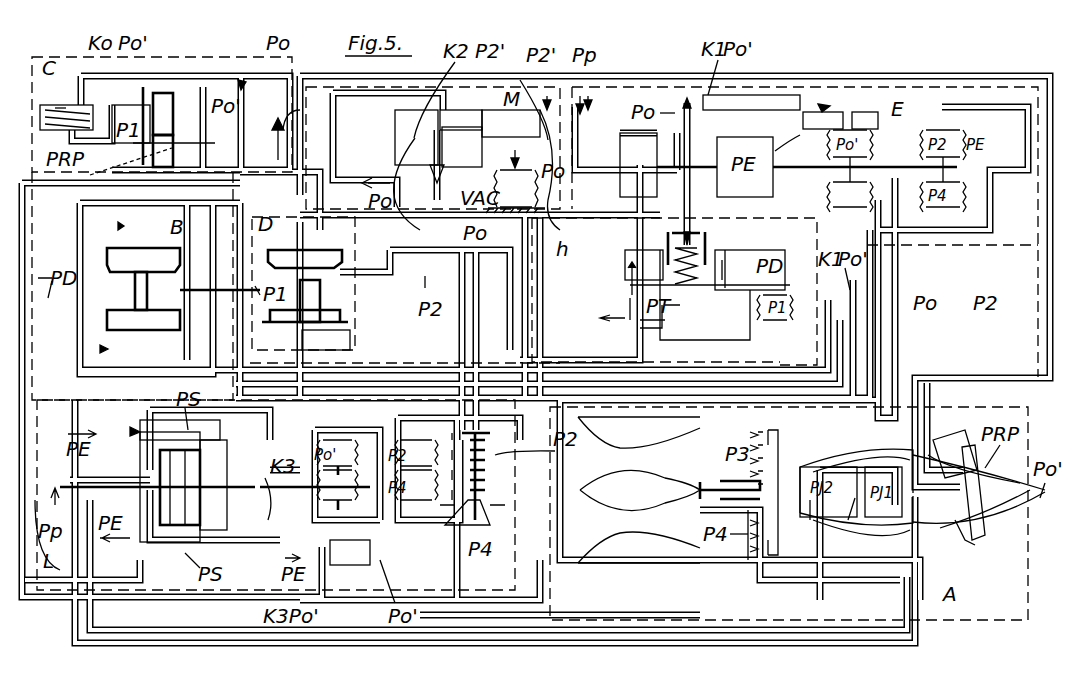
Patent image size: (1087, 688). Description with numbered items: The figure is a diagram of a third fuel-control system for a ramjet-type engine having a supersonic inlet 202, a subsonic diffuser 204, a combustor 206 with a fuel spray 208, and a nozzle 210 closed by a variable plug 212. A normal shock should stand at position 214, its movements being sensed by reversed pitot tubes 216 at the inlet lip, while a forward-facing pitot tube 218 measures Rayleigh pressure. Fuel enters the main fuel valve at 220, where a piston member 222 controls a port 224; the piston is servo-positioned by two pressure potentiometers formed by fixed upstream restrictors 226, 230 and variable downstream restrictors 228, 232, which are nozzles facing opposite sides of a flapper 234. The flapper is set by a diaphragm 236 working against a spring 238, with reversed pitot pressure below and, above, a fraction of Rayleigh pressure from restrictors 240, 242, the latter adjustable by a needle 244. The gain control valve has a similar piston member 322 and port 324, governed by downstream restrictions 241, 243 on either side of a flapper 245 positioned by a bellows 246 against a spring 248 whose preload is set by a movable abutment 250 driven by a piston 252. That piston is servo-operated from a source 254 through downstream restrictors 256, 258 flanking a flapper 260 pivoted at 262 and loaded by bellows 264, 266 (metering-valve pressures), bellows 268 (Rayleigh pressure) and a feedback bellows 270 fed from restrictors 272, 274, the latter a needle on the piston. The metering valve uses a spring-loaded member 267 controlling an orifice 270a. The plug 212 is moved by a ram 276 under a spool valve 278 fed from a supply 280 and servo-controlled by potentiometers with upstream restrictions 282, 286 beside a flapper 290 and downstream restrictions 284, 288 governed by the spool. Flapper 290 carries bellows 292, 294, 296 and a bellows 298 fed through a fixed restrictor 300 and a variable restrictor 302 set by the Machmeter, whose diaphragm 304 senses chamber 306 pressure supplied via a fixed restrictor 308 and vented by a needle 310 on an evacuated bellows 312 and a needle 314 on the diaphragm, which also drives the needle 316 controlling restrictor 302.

The supersonic inlet 202 is at (970, 515).
The subsonic diffuser 204 is at (860, 555).
The combustor 206 is at (760, 560).
The fuel spray 208 is at (778, 445).
The nozzle 210 is at (625, 535).
The variable plug 212 is at (639, 490).
The normal shock wave position 214 is at (975, 545).
The reversed pitot tubes 216 is at (975, 527).
The forward-facing pitot tube 218 is at (1060, 498).
The fuel supply 220 is at (140, 298).
The piston member 222 is at (105, 310).
The port 224 is at (110, 285).
The upstream restrictor 226 is at (120, 226).
The downstream restrictor 228 is at (177, 151).
The upstream restrictor 230 is at (105, 345).
The downstream restrictor 232 is at (152, 120).
The flapper 234 is at (90, 175).
The diaphragm 236 is at (62, 122).
The spring 238 is at (62, 105).
The restrictor 240 is at (242, 82).
The downstream restriction 241 is at (632, 270).
The downstream restrictor 242 is at (278, 108).
The downstream restriction 243 is at (630, 300).
The needle 244 is at (358, 193).
The flapper 245 is at (688, 290).
The bellows 246 is at (760, 310).
The spring 248 is at (665, 265).
The movable abutment 250 is at (698, 252).
The piston 252 is at (640, 157).
The servo fluid source 254 is at (580, 140).
The downstream restrictor 256 is at (809, 134).
The downstream restrictor 258 is at (805, 205).
The flapper 260 is at (845, 182).
The pivot 262 is at (905, 140).
The bellows 264 is at (955, 175).
The bellows 266 is at (985, 290).
The spring-loaded member 267 is at (480, 520).
The bellows 268 is at (875, 125).
The bellows 270 is at (895, 195).
The orifice 270a is at (455, 490).
The restrictor 272 is at (823, 108).
The downstream restrictor 274 is at (687, 105).
The ram 276 is at (848, 510).
The spool valve 278 is at (170, 520).
The supply 280 is at (41, 616).
The upstream restriction 282 is at (268, 475).
The downstream restriction 284 is at (135, 430).
The upstream restriction 286 is at (270, 500).
The downstream restriction 288 is at (132, 540).
The flapper 290 is at (330, 510).
The bellows 292 is at (385, 460).
The bellows 294 is at (425, 530).
The bellows 296 is at (318, 363).
The bellows 298 is at (350, 551).
The fixed restrictor 300 is at (355, 560).
The variable downstream restrictor 302 is at (375, 158).
The diaphragm 304 is at (455, 128).
The chamber 306 is at (495, 187).
The fixed restrictor 308 is at (540, 120).
The needle 310 is at (512, 148).
The bellows 312 is at (540, 185).
The needle 314 is at (435, 180).
The needle 316 is at (397, 140).
The piston member 322 is at (320, 268).
The port 324 is at (318, 301).